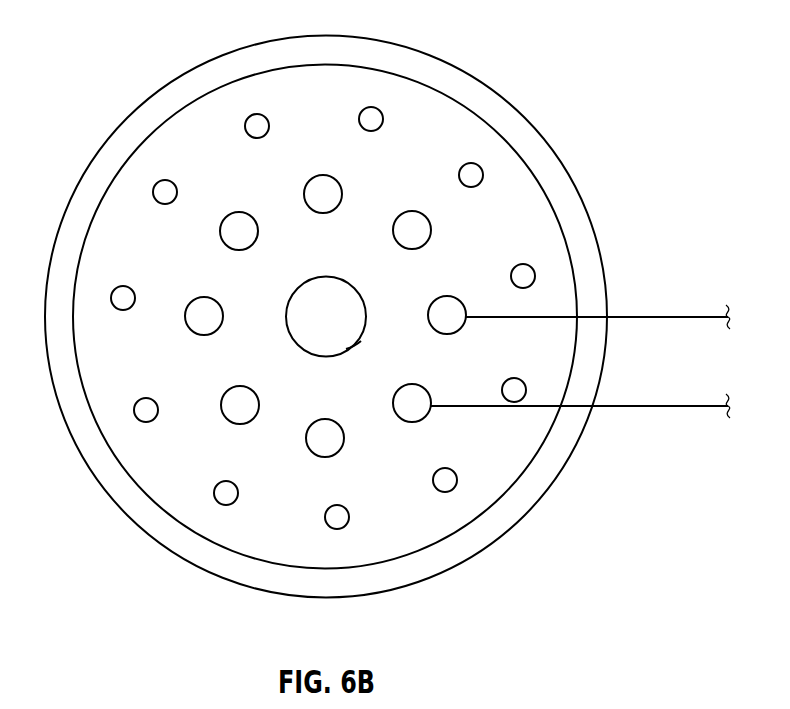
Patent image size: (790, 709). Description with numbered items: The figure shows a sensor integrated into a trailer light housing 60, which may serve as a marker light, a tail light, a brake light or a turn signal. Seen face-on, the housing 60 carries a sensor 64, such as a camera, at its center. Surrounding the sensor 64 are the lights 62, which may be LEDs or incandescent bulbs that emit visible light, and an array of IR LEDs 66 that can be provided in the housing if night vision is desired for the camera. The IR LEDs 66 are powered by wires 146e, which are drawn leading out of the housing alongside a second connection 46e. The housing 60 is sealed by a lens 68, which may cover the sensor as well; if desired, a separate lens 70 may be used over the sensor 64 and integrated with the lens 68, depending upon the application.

The light housing 60 is at (93, 480).
The lights 62 is at (463, 306).
The sensor 64 is at (305, 328).
The array of IR LEDs 66 is at (516, 402).
The lens 68 is at (172, 482).
The separate lens 70 is at (355, 347).
The tube 46e is at (647, 316).
The wires 146e is at (672, 410).